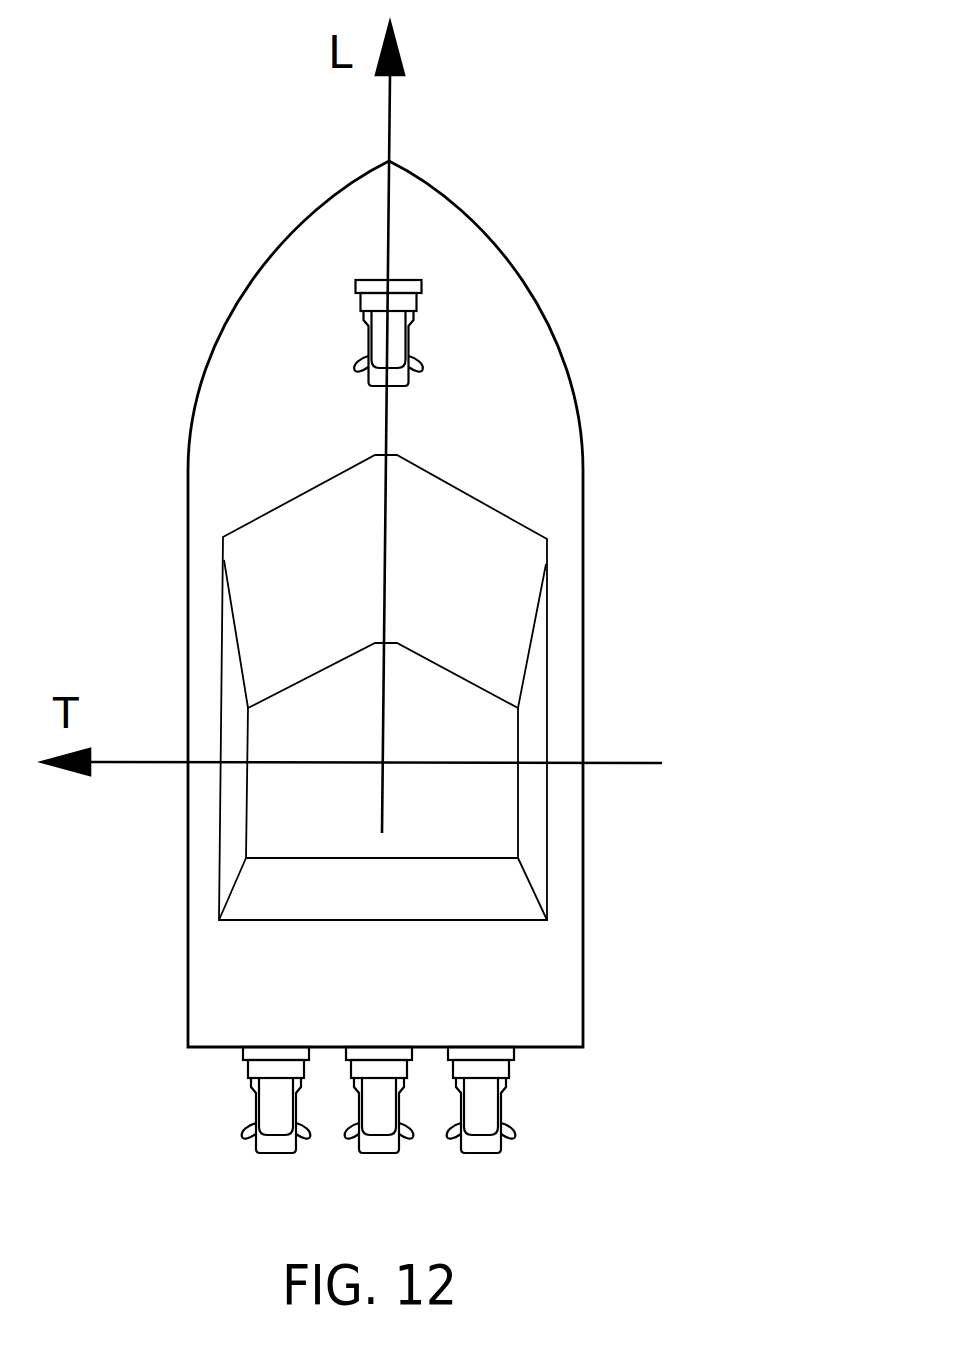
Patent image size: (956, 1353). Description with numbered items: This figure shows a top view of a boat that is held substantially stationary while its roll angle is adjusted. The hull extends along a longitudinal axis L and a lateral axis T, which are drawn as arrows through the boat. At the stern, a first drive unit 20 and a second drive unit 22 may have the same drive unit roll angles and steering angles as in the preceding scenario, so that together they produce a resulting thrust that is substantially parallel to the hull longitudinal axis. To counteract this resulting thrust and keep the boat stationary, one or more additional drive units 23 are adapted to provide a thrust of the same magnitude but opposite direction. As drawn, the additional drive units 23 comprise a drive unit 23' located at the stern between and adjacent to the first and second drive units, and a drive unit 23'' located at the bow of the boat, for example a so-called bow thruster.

The first drive unit 20 is at (222, 1126).
The second drive unit 22 is at (535, 1130).
The additional drive units 23 is at (592, 663).
The drive unit located at the stern 23' is at (441, 1143).
The drive unit located at the bow 23'' is at (500, 303).